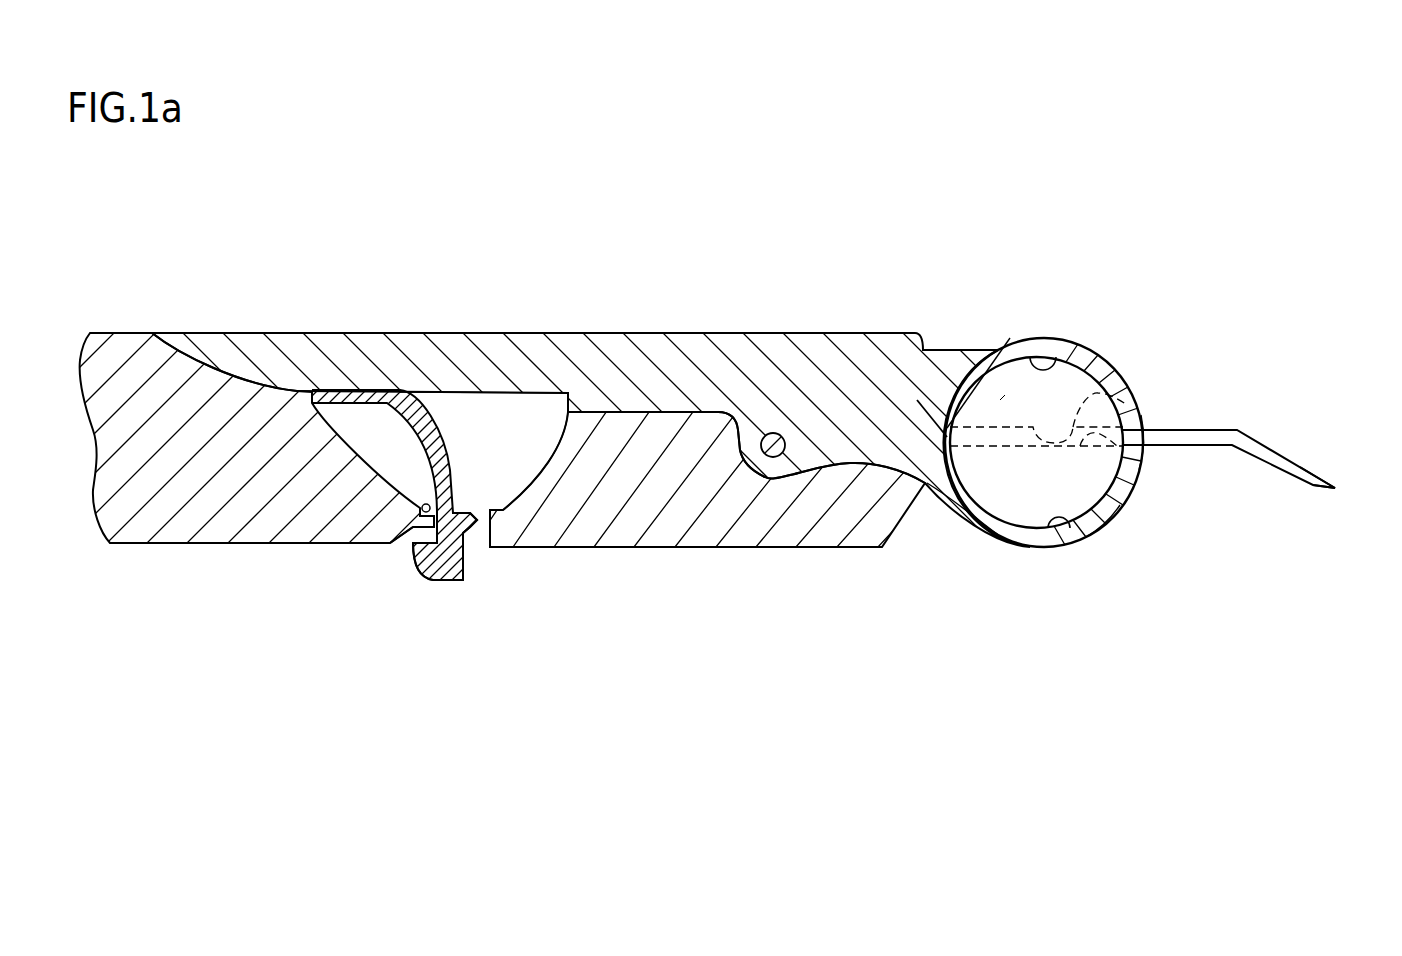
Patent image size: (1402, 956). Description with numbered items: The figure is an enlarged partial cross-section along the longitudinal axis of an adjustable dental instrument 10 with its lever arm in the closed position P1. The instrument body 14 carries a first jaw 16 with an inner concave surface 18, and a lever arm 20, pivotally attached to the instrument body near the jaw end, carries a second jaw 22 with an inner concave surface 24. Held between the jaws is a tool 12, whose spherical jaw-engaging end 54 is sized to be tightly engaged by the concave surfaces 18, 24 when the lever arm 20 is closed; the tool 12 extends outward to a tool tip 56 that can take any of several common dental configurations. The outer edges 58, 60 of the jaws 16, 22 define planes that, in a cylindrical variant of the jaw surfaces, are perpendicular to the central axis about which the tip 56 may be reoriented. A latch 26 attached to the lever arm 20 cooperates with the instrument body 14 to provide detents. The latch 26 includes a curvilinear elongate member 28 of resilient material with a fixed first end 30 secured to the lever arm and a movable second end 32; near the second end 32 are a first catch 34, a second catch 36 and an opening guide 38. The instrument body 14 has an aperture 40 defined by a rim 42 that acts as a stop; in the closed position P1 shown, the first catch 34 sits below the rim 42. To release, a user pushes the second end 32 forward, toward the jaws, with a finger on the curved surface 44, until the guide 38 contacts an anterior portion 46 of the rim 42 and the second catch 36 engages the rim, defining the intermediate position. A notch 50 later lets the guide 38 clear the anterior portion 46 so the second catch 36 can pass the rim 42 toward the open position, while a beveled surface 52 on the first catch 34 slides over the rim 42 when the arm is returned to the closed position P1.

The adjustable dental instrument 10 is at (433, 185).
The closed position P1 is at (684, 194).
The tool 12 is at (1258, 422).
The instrument body 14 is at (680, 562).
The first jaw 16 is at (1095, 352).
The inner concave surface 18 is at (1055, 357).
The lever arm 20 is at (575, 340).
The second jaw 22 is at (1103, 508).
The inner concave surface 24 is at (1064, 530).
The latch 26 is at (462, 442).
The curvilinear elongate member 28 is at (440, 393).
The fixed first end 30 is at (300, 388).
The movable second end 32 is at (467, 583).
The first catch 34 is at (423, 506).
The second catch 36 is at (420, 560).
The opening guide 38 is at (483, 517).
The aperture 40 is at (505, 578).
The rim 42 is at (407, 545).
The surface 44 is at (430, 580).
The anterior portion 46 is at (490, 547).
The notch 50 is at (473, 547).
The beveled surface 52 is at (410, 553).
The spherical jaw-engaging end 54 is at (1010, 383).
The tool tip 56 is at (1322, 490).
The outer edge 58 is at (1123, 382).
The outer edge 60 is at (1127, 455).